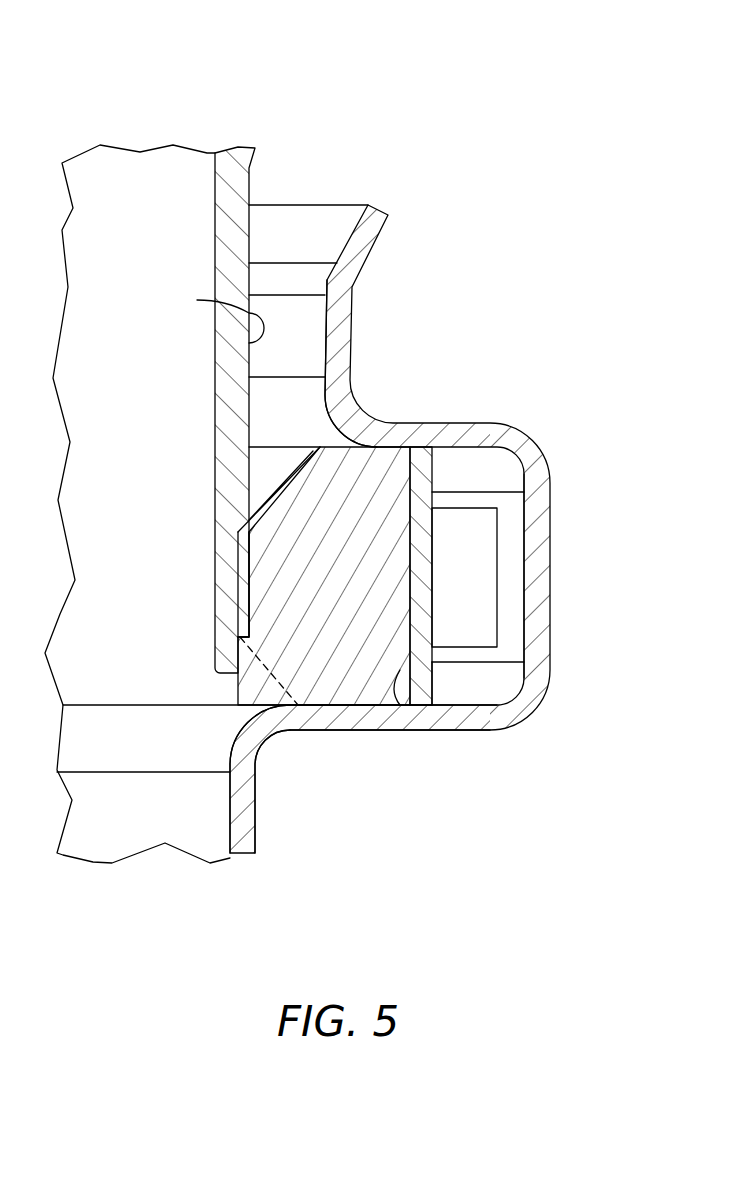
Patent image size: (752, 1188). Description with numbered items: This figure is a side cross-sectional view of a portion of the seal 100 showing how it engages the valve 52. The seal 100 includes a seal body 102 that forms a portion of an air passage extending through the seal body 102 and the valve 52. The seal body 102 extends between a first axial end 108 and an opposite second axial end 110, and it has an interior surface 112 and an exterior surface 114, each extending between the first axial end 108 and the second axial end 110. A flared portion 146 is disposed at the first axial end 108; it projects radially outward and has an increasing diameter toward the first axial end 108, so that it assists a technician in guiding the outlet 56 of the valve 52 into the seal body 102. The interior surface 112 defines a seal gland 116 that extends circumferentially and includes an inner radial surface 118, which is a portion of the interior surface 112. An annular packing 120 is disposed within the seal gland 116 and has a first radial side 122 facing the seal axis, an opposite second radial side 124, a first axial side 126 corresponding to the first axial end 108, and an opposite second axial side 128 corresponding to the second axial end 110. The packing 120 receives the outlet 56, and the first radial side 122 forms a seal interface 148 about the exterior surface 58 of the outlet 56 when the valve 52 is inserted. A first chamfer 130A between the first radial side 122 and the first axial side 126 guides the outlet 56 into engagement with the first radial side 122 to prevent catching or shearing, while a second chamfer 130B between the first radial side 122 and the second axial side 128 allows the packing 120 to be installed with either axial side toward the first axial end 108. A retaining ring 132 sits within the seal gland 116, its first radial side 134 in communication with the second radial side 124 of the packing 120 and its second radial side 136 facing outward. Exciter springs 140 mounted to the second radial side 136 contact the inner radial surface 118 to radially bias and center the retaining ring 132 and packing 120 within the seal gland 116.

The valve 52 is at (240, 126).
The outlet 56 is at (203, 328).
The exterior surface 58 is at (212, 310).
The seal 100 is at (498, 249).
The seal body 102 is at (483, 422).
The first axial end 108 is at (378, 158).
The second axial end 110 is at (243, 887).
The interior surface 112 is at (230, 822).
The exterior surface 114 is at (258, 848).
The seal gland 116 is at (490, 685).
The inner radial surface 118 is at (527, 519).
The packing 120 is at (408, 443).
The first radial side 122 is at (238, 588).
The second radial side 124 is at (398, 705).
The first axial side 126 is at (358, 440).
The second axial side 128 is at (345, 712).
The first chamfer 130A is at (266, 471).
The second chamfer 130B is at (258, 700).
The retaining ring 132 is at (435, 473).
The first radial side 134 is at (413, 515).
The second radial side 136 is at (432, 610).
The exciter springs 140 is at (487, 557).
The flared portion 146 is at (298, 220).
The seal interface 148 is at (226, 543).